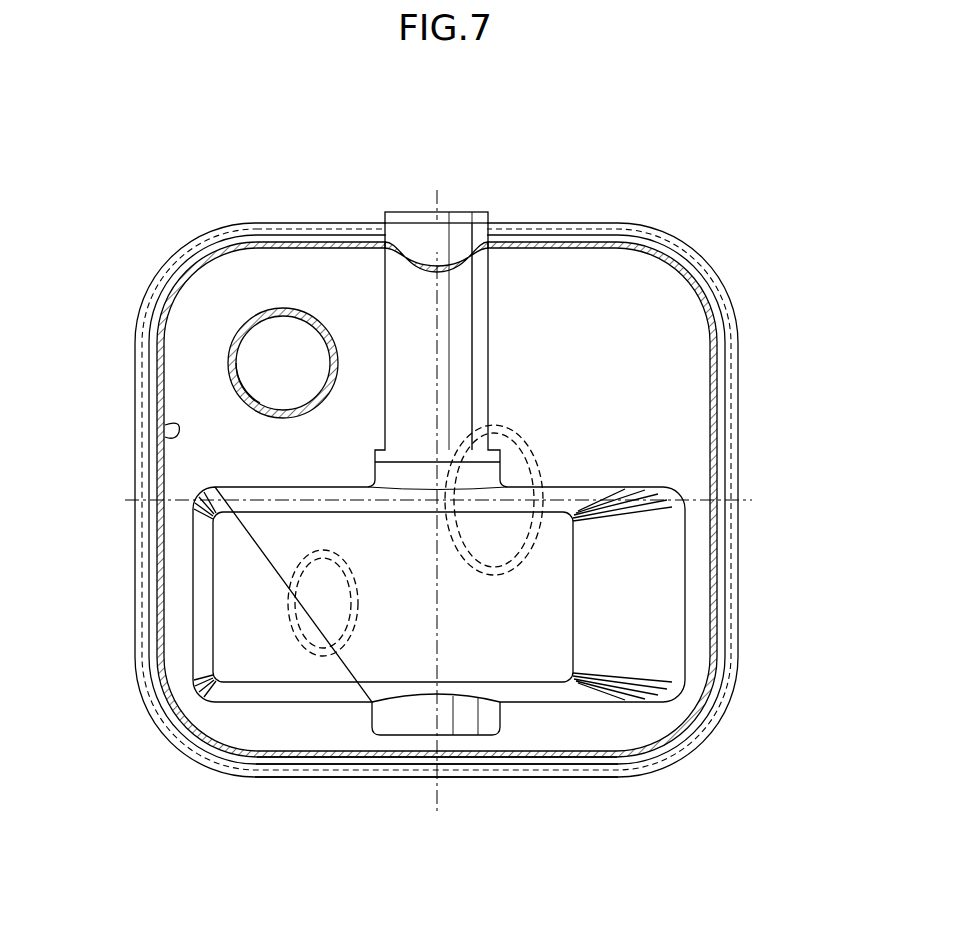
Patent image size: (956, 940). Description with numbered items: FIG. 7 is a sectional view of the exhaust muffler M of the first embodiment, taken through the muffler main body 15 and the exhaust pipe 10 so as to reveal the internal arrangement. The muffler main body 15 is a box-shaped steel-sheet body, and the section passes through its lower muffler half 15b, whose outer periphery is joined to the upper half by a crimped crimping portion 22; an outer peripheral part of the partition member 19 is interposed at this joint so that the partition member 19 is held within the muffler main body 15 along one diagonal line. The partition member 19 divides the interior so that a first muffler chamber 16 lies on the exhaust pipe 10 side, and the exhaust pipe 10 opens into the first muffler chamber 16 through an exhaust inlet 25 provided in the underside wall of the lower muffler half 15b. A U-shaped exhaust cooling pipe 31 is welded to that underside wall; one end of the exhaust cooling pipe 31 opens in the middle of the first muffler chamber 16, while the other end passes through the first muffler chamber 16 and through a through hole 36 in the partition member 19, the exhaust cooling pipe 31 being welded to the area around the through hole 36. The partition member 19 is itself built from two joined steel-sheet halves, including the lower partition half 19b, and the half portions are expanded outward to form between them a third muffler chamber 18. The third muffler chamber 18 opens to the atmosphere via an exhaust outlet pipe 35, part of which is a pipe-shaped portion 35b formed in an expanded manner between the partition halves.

The exhaust pipe 10 is at (498, 565).
The muffler main body 15 is at (411, 498).
The lower muffler half 15b is at (630, 247).
The first muffler chamber 16 is at (165, 430).
The third muffler chamber 18 is at (518, 652).
The partition member 19 is at (236, 724).
The lower partition half 19b is at (356, 740).
The crimping portion 22 is at (155, 303).
The exhaust inlet 25 is at (505, 452).
The exhaust cooling pipe 31 is at (333, 332).
The exhaust outlet pipe 35 is at (408, 365).
The pipe-shaped portion 35b is at (483, 298).
The through hole 36 is at (258, 402).
The exhaust muffler M is at (752, 688).